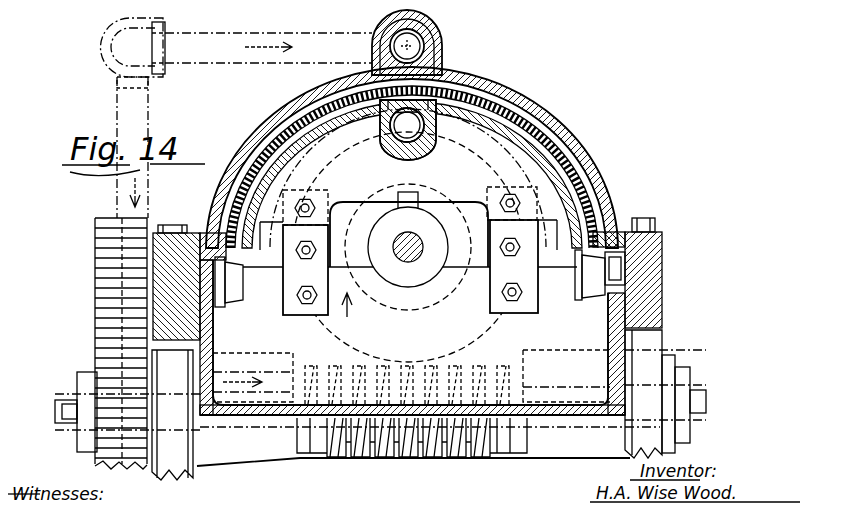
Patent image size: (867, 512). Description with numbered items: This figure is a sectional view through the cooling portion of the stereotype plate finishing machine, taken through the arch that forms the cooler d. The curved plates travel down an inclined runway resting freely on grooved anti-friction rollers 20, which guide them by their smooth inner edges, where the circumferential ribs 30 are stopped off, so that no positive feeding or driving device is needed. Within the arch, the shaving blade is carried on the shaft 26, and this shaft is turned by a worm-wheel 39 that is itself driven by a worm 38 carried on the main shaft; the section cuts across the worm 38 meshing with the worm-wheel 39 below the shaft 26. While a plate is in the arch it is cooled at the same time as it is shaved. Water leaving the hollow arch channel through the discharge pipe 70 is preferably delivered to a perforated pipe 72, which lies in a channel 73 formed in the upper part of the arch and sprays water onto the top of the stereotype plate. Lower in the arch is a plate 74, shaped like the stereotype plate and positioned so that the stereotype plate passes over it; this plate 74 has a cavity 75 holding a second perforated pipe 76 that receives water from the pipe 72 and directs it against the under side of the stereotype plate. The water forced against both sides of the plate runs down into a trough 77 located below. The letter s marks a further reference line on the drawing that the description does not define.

The discharge pipe 70 is at (101, 48).
The pipe 72 is at (440, 33).
The channel 73 is at (422, 58).
The plate 74 is at (552, 109).
The circumferential ribs 30 is at (570, 156).
The rollers 20 is at (224, 303).
The cavity 75 is at (432, 148).
The pipe 76 is at (398, 143).
The shaft 26 is at (412, 252).
The worm-wheel 39 is at (500, 323).
The worm 38 is at (392, 457).
The trough 77 is at (560, 415).
The cooler d is at (288, 105).
The reference line s is at (333, 100).